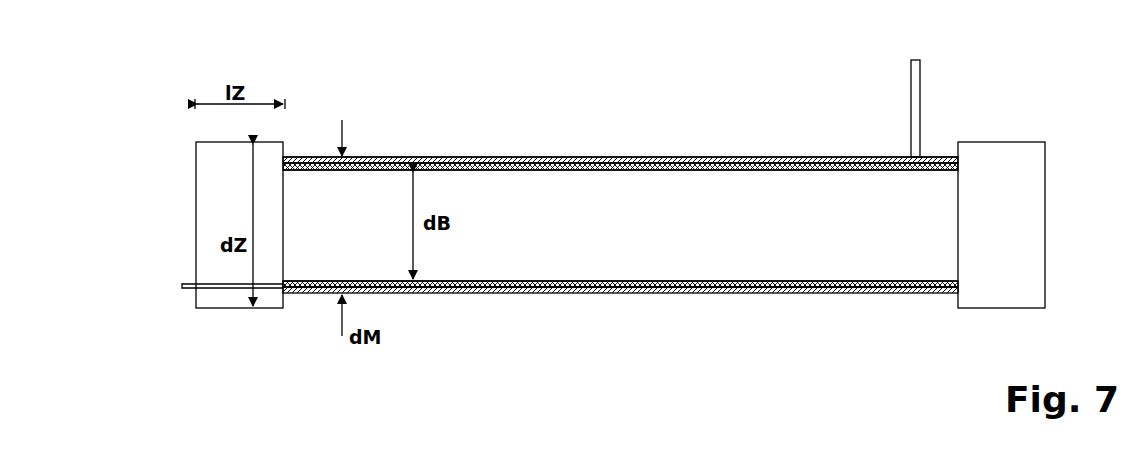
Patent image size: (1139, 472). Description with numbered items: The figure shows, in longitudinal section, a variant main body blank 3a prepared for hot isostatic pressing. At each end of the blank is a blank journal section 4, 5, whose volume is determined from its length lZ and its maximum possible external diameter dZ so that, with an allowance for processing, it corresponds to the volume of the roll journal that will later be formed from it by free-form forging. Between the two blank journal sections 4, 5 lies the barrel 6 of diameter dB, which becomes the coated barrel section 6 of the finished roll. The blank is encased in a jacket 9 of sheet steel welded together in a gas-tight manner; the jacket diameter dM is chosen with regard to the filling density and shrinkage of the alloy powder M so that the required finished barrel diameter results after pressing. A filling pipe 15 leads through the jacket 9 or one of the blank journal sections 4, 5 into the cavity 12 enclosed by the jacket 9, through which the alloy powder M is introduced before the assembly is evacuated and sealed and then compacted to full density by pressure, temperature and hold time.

The main body blank 3a is at (485, 142).
The blank journal section 4 is at (208, 213).
The blank journal section 5 is at (1025, 203).
The coated barrel section 6 is at (580, 212).
The jacket 9 is at (845, 158).
The cavity 12 is at (912, 288).
The filling pipe 15 is at (220, 290).
The alloy powder M is at (815, 158).